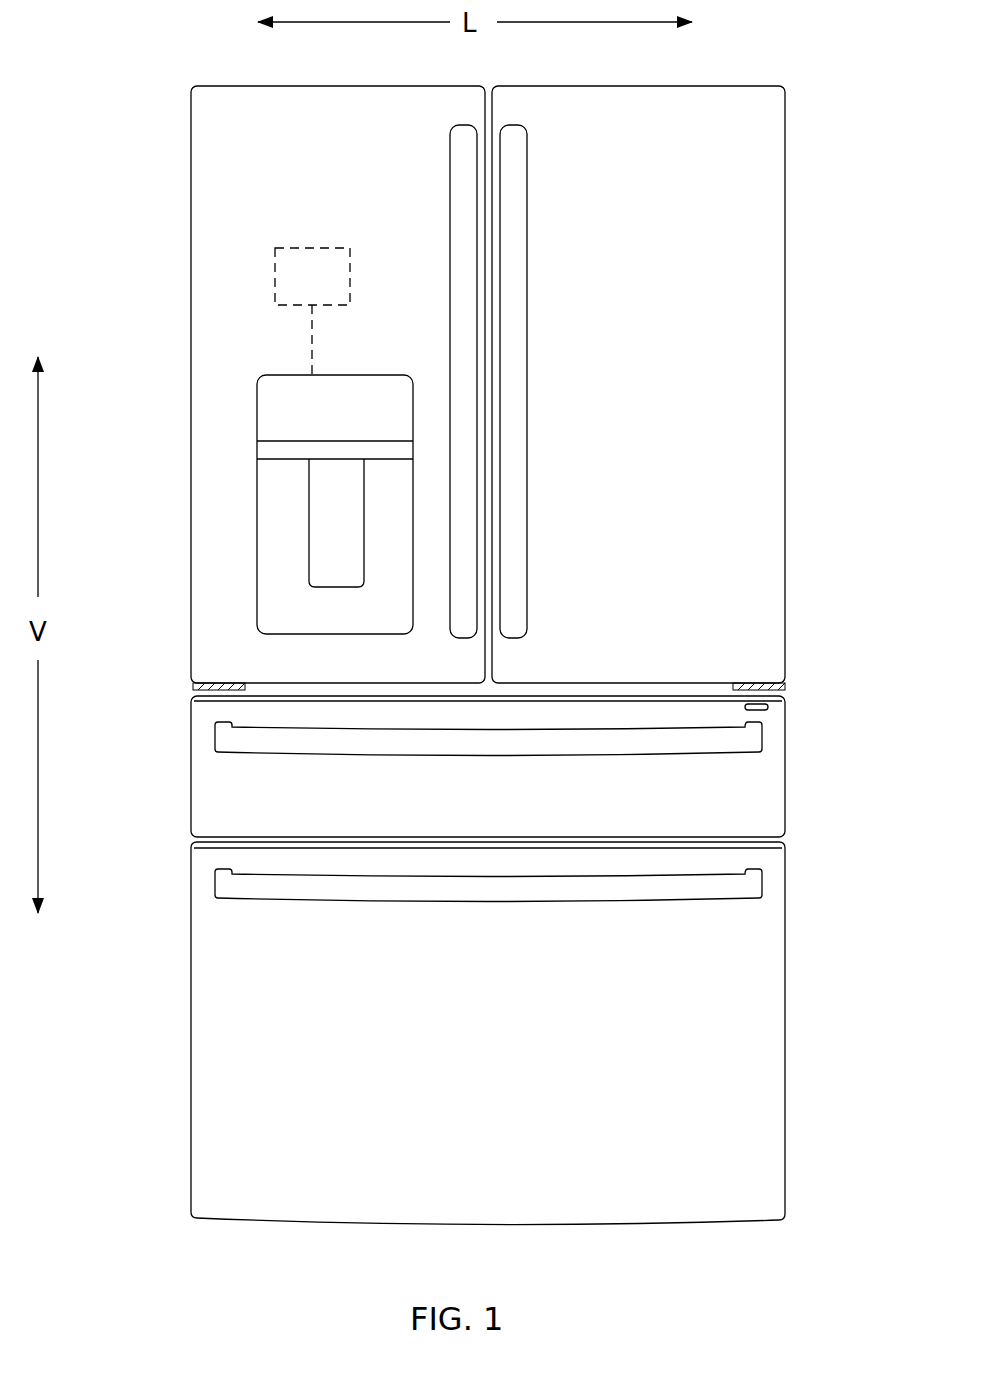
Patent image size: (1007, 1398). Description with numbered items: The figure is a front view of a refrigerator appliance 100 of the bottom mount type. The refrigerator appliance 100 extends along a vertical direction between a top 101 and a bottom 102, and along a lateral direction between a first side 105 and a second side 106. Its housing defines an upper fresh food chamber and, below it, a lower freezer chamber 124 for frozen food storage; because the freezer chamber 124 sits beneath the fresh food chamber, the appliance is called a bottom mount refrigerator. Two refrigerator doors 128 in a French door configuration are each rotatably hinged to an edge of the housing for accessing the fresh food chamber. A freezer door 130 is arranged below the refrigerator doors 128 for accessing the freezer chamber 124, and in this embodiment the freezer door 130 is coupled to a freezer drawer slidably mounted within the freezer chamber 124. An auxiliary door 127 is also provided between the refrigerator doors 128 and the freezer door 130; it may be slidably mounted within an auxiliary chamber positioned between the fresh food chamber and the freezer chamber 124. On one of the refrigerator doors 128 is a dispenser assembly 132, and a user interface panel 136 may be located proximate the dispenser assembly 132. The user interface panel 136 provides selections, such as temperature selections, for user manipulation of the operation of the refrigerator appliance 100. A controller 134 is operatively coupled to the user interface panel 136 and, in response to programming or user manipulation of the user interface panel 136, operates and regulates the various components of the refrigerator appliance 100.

The refrigerator appliance 100 is at (810, 195).
The top 101 is at (178, 85).
The bottom 102 is at (212, 1228).
The first side 105 is at (183, 978).
The second side 106 is at (800, 1100).
The freezer chamber 124 is at (680, 1165).
The auxiliary door 127 is at (740, 790).
The refrigerator doors 128 is at (212, 143).
The freezer door 130 is at (733, 957).
The dispenser assembly 132 is at (290, 540).
The controller 134 is at (275, 262).
The user interface panel 136 is at (268, 398).